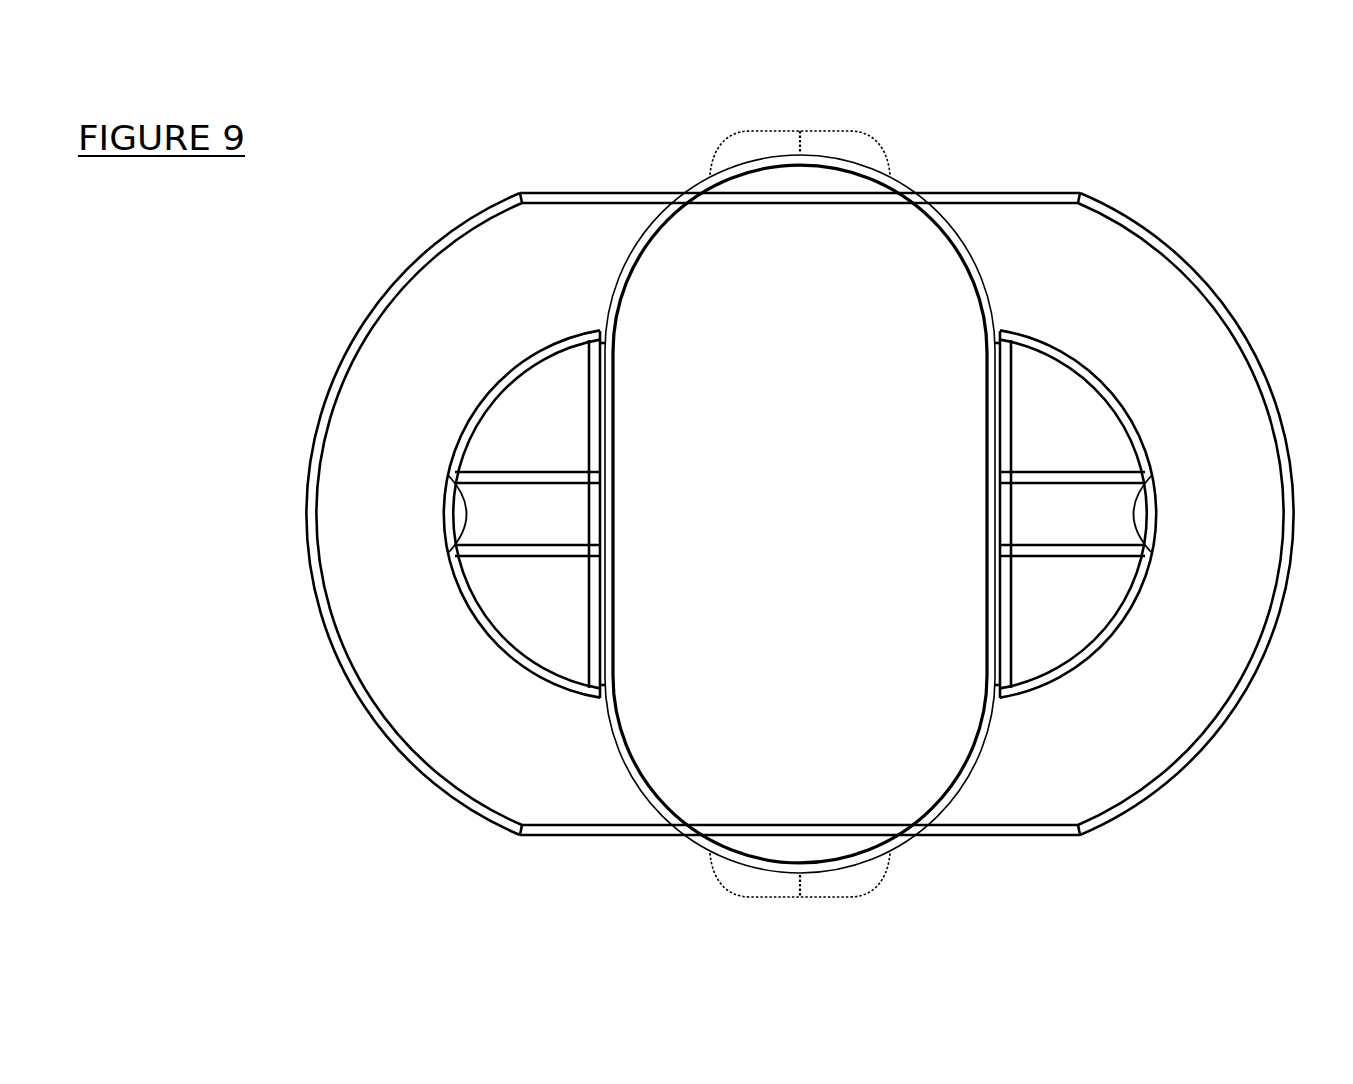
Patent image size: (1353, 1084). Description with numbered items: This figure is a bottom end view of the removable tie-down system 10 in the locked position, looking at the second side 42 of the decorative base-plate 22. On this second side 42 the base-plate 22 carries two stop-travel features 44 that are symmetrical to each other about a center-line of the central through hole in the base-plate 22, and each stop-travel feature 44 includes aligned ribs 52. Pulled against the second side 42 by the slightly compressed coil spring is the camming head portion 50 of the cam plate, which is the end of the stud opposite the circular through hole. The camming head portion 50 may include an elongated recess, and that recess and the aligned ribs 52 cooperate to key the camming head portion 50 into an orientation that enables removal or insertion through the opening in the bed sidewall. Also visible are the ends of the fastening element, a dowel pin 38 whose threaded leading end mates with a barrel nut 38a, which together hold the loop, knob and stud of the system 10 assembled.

The tie-down system 10 is at (755, 510).
The base-plate 22 is at (302, 430).
The second side 42 is at (405, 367).
The stop-travel features 44 is at (590, 333).
The camming head portion 50 is at (668, 712).
The aligned ribs 52 is at (497, 532).
The dowel pin 38 is at (855, 870).
The barrel nut 38a is at (743, 140).